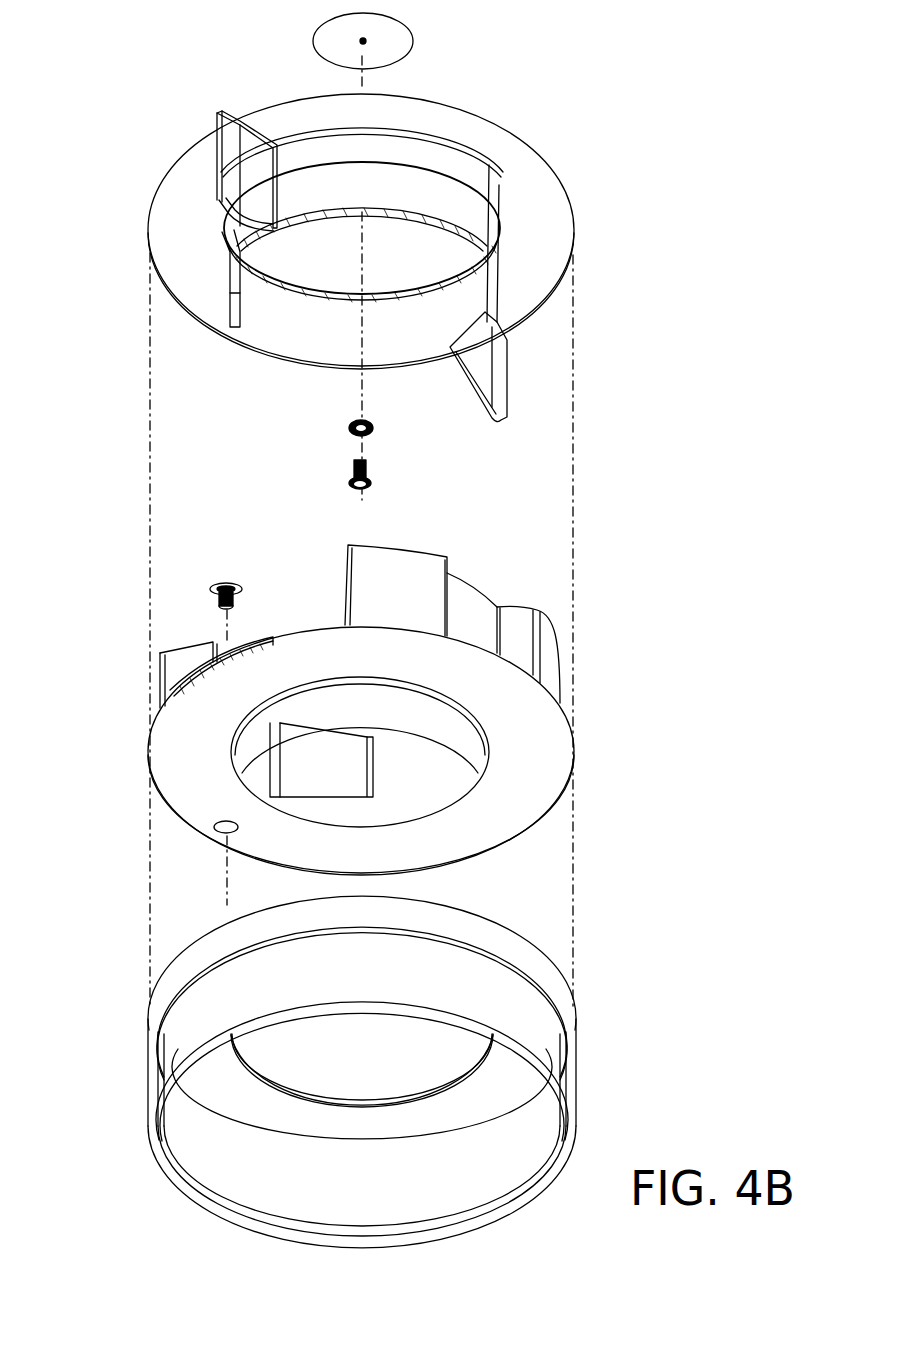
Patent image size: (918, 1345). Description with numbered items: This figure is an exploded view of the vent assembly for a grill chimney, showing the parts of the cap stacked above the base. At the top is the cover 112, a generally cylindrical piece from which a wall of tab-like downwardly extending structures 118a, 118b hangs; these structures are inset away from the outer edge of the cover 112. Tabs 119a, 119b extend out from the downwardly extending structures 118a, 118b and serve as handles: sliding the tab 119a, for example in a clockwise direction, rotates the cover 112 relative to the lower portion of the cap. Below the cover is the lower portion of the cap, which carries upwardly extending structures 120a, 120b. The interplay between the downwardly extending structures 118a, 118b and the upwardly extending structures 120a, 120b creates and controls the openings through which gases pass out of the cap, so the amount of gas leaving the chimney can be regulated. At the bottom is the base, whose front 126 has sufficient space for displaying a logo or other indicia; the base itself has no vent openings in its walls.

The cover 112 is at (527, 192).
The downwardly extending structure 118a is at (310, 354).
The downwardly extending structure 118b is at (447, 160).
The tab 119a is at (497, 370).
The tab 119b is at (215, 140).
The upwardly extending structure 120a is at (552, 662).
The upwardly extending structure 120b is at (160, 653).
The front 126 is at (152, 1044).